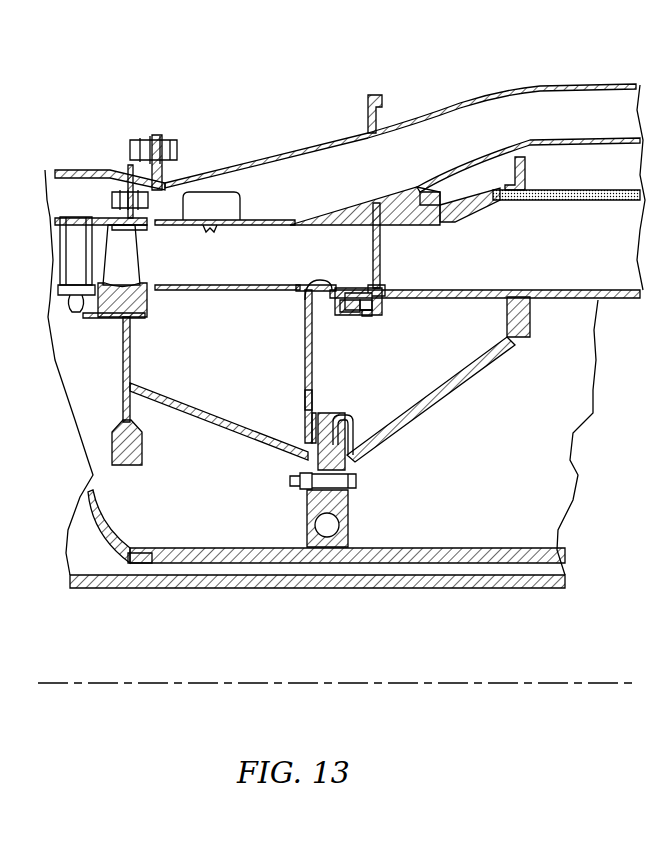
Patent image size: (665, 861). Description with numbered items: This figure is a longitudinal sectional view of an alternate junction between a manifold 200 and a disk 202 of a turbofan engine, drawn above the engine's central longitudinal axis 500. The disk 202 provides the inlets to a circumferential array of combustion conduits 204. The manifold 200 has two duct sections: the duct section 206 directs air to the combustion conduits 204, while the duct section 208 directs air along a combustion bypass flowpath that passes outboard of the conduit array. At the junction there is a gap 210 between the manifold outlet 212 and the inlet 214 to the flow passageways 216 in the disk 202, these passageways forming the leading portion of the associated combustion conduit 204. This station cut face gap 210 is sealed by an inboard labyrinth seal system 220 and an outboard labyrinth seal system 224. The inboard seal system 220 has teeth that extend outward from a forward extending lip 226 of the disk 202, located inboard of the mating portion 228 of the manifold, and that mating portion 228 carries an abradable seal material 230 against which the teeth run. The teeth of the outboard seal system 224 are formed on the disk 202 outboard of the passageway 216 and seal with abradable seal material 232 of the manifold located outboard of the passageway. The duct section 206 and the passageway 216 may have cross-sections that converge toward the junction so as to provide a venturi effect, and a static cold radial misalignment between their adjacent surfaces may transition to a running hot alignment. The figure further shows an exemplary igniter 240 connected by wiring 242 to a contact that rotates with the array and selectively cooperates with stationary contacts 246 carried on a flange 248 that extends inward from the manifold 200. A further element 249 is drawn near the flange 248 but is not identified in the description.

The manifold 200 is at (300, 292).
The disk 202 is at (487, 292).
The combustion conduit 204 is at (593, 254).
The duct section 206 is at (280, 276).
The duct section 208 is at (424, 161).
The gap 210 is at (378, 300).
The manifold outlet 212 is at (372, 262).
The inlet 214 is at (390, 252).
The flow passageway 216 is at (458, 273).
The inboard labyrinth seal system 220 is at (355, 320).
The outboard labyrinth seal system 224 is at (450, 200).
The forward extending lip 226 is at (367, 318).
The mating portion 228 is at (305, 352).
The abradable seal material 230 is at (333, 300).
The abradable seal material 232 is at (440, 178).
The igniter 240 is at (597, 295).
The wiring 242 is at (440, 397).
The stationary contact 246 is at (308, 445).
The flange 248 is at (306, 395).
The tube 249 is at (352, 452).
The central longitudinal axis 500 is at (500, 683).